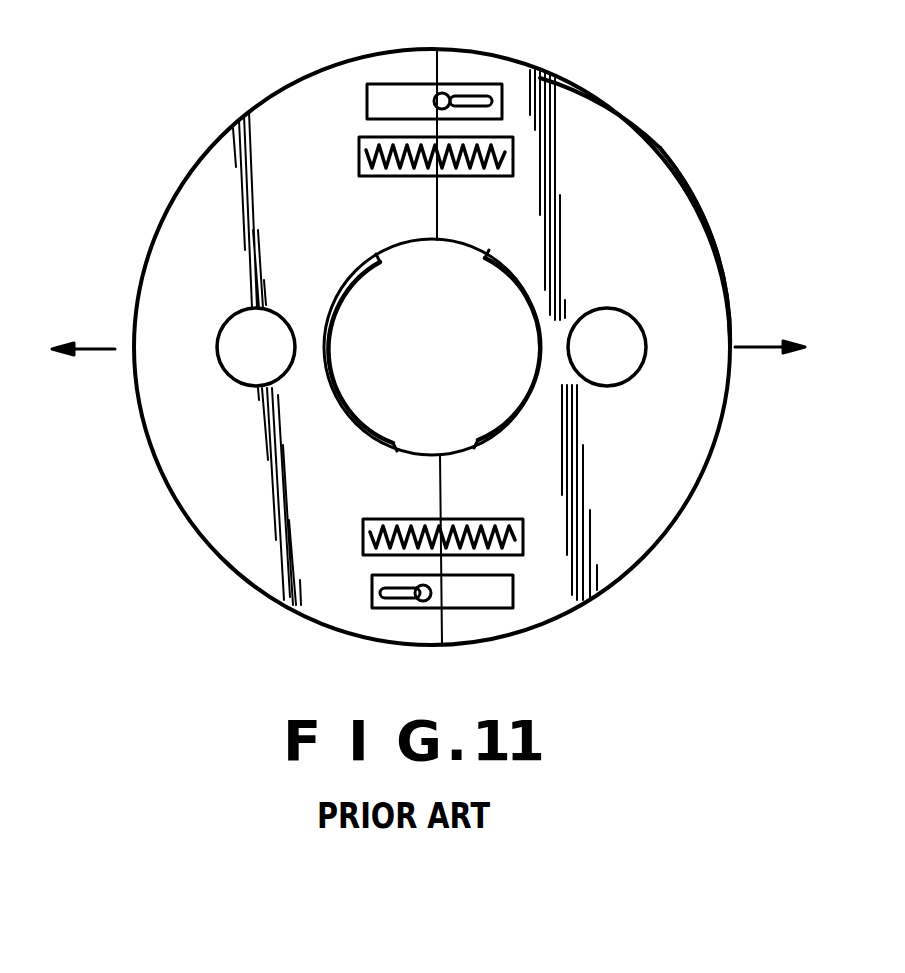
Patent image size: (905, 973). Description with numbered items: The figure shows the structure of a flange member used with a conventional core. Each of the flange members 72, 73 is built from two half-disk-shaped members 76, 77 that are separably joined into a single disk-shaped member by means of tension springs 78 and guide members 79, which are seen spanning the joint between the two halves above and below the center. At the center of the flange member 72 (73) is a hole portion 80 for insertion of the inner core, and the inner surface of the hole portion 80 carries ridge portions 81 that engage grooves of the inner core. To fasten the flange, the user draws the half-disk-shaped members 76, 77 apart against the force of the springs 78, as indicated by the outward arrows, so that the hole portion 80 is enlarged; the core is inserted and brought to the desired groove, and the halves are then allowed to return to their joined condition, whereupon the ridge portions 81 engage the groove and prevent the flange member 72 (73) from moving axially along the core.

The flange member 72 is at (692, 148).
The flange member 73 is at (692, 148).
The half-disk-shaped member 76 is at (300, 100).
The half-disk-shaped member 77 is at (592, 118).
The tension spring 78 is at (476, 172).
The guide member 79 is at (418, 92).
The hole portion 80 is at (458, 393).
The ridge portion 81 is at (363, 283).